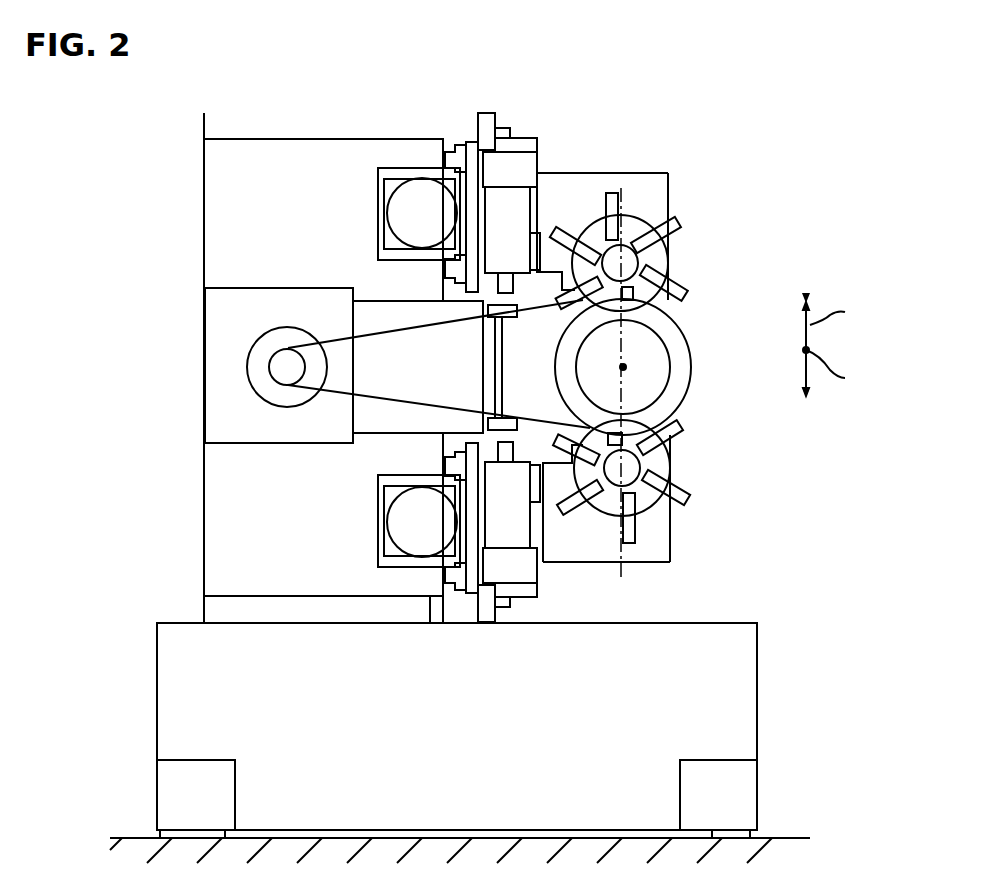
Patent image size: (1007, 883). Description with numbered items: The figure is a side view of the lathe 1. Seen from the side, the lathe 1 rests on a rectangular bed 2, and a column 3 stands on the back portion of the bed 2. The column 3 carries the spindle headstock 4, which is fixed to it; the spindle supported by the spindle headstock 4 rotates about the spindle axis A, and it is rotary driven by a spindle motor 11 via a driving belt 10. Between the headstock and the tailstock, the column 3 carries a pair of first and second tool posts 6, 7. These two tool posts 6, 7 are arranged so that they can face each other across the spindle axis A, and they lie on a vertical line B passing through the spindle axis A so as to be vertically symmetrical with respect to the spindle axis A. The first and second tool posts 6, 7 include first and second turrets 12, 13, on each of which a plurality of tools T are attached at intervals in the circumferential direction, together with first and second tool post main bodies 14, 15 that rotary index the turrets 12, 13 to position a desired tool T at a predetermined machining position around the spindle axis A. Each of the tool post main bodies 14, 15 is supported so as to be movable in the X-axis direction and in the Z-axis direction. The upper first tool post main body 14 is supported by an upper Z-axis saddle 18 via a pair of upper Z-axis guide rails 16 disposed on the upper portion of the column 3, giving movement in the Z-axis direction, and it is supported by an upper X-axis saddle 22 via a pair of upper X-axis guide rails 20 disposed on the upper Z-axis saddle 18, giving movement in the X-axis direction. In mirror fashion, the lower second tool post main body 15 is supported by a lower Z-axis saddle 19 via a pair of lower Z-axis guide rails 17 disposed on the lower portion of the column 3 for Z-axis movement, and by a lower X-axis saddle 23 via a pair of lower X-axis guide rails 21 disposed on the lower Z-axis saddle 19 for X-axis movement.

The lathe 1 is at (722, 120).
The bed 2 is at (762, 669).
The column 3 is at (198, 223).
The spindle headstock 4 is at (695, 391).
The first tool post 6 is at (643, 170).
The second tool post 7 is at (677, 534).
The driving belt 10 is at (333, 393).
The spindle motor 11 is at (255, 397).
The first turret 12 is at (668, 213).
The second turret 13 is at (670, 448).
The first tool post main body 14 is at (668, 185).
The second tool post main body 15 is at (660, 563).
The upper Z-axis guide rail 16 is at (448, 142).
The lower Z-axis guide rail 17 is at (458, 592).
The upper Z-axis saddle 18 is at (470, 140).
The lower Z-axis saddle 19 is at (474, 597).
The upper X-axis guide rail 20 is at (497, 116).
The lower X-axis guide rail 21 is at (500, 613).
The upper X-axis saddle 22 is at (537, 140).
The lower X-axis saddle 23 is at (540, 588).
The spindle axis A is at (623, 367).
The vertical line B is at (660, 320).
The tool T is at (682, 225).